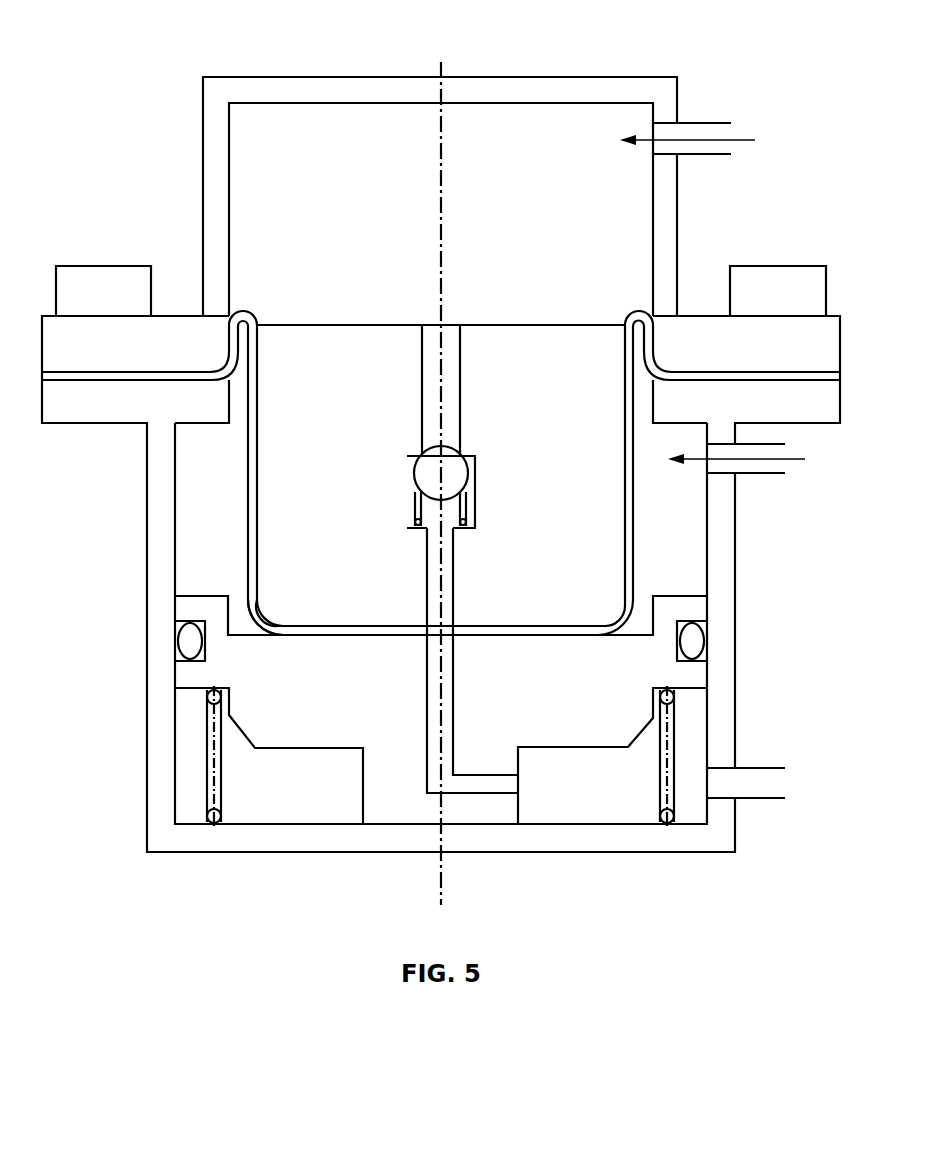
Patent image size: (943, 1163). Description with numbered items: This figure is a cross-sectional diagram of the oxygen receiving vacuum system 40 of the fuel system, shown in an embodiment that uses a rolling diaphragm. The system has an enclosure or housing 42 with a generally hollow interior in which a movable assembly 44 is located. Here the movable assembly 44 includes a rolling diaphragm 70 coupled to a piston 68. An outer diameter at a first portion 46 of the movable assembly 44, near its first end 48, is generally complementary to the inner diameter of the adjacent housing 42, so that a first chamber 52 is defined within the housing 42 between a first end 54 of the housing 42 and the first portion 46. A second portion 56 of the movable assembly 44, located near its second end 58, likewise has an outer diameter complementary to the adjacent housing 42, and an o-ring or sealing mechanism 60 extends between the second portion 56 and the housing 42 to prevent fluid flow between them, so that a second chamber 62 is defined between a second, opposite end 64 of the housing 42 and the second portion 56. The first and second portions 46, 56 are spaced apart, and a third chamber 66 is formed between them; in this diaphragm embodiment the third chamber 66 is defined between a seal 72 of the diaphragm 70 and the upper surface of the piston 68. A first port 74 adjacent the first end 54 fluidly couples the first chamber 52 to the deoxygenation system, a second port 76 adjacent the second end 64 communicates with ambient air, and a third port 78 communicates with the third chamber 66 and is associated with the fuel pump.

The valve actuator assembly 40 is at (91, 104).
The housing 42 is at (604, 86).
The movable assembly 44 is at (232, 650).
The first portion of the movable assembly 46 is at (288, 340).
The first end of the movable assembly 48 is at (372, 323).
The first chamber 52 is at (396, 176).
The first end of the housing 54 is at (496, 106).
The second portion of the movable assembly 56 is at (660, 646).
The second end of the movable assembly 58 is at (378, 826).
The o-ring or sealing mechanism 60 is at (188, 641).
The second chamber 62 is at (247, 790).
The second end of the housing 64 is at (548, 810).
The third chamber 66 is at (200, 526).
The piston 68 is at (573, 700).
The rolling diaphragm 70 is at (575, 495).
The seal of the diaphragm 72 is at (249, 478).
The first port 74 is at (700, 123).
The second port 76 is at (752, 787).
The third port 78 is at (763, 452).